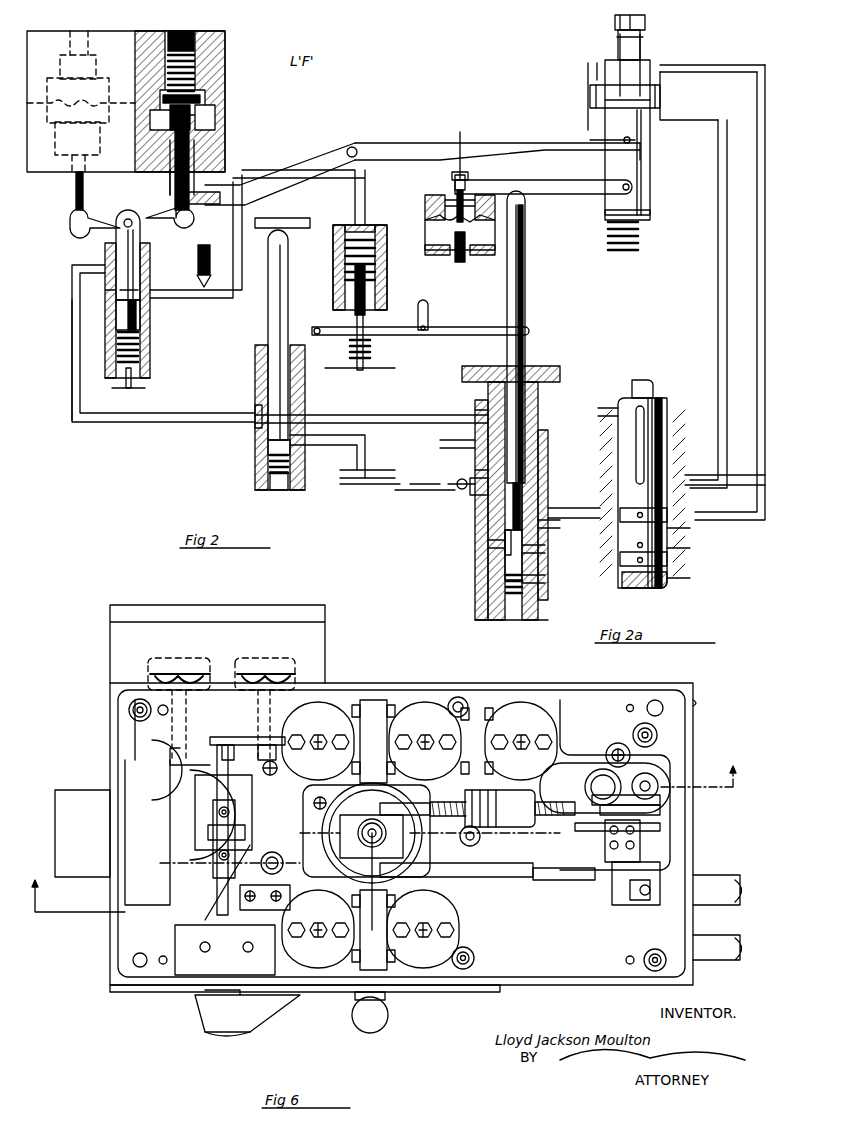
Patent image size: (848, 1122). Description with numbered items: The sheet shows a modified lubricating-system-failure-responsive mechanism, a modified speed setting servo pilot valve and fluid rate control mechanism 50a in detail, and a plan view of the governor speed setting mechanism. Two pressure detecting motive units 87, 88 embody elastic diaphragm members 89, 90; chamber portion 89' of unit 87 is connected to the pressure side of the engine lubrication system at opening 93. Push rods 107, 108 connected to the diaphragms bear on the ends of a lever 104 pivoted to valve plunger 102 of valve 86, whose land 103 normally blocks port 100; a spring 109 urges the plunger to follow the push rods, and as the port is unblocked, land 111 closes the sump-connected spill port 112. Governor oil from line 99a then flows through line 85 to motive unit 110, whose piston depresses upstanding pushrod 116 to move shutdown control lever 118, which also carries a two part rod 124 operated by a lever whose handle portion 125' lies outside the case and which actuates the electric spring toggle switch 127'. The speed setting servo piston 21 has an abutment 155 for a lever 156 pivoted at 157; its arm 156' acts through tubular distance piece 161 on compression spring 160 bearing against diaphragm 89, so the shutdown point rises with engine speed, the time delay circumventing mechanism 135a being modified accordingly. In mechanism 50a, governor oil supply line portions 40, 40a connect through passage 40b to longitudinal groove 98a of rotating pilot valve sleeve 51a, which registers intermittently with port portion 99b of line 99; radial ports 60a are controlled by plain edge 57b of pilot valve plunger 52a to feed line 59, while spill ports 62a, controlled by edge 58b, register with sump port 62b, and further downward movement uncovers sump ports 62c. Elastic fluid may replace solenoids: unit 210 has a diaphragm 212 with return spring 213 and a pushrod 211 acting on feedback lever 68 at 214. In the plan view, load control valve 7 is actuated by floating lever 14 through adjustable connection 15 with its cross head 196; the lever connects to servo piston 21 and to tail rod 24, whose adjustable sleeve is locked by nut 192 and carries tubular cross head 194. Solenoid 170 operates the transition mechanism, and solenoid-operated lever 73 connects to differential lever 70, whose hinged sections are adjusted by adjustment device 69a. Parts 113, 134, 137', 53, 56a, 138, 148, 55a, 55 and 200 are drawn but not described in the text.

In FIG. 2, the pressure detecting motive unit 88 is at (75, 30).
In FIG. 2, the pressure detecting motive unit 87 is at (200, 28).
In FIG. 2, the opening 93 is at (195, 42).
In FIG. 2, the chamber portion 89' is at (215, 72).
In FIG. 2, the elastic diaphragm member 89 is at (210, 91).
In FIG. 6, the elastic diaphragm member 89 is at (270, 697).
In FIG. 2, the compression spring 160 is at (195, 120).
In FIG. 2, the push rod 107 is at (160, 55).
In FIG. 2, the tubular distance piece 161 is at (172, 180).
In FIG. 2, the push rod 108 is at (78, 186).
In FIG. 2, the lever 104 is at (160, 222).
In FIG. 6, the lever 104 is at (170, 752).
In FIG. 2, the valve plunger 102 is at (128, 218).
In FIG. 2, the land 103 is at (118, 258).
In FIG. 2, the port 100 is at (110, 282).
In FIG. 2, the spill port 112 is at (112, 312).
In FIG. 2, the land 111 is at (140, 318).
In FIG. 2, the spring 109 is at (142, 352).
In FIG. 2, the screw 113 is at (196, 264).
In FIG. 2, the valve 86 is at (68, 366).
In FIG. 2, the line 99a is at (136, 415).
In FIG. 2, the line 85 is at (232, 298).
In FIG. 2, the time delay fluid control circumventing mechanism 135a is at (252, 404).
In FIG. 2, the plate 134 is at (302, 228).
In FIG. 2, the rod 137' is at (297, 335).
In FIG. 2, the motive unit 110 is at (391, 258).
In FIG. 2, the pushrod 116 is at (364, 331).
In FIG. 2, the shutdown control lever 118 is at (440, 334).
In FIG. 2, the two part rod 124 is at (430, 312).
In FIG. 2, the lever 156 is at (497, 137).
In FIG. 2, the lever arm 156' is at (280, 161).
In FIG. 2, the pivot 157 is at (355, 147).
In FIG. 2, the floating lever 68 is at (552, 196).
In FIG. 2, the point of action 214 is at (460, 148).
In FIG. 2, the pushrod 211 is at (452, 190).
In FIG. 2, the return spring 213 is at (425, 200).
In FIG. 2, the diaphragm 212 is at (430, 252).
In FIG. 2, the elastic diaphragm assembly 210 is at (480, 255).
In FIG. 2, the speed setting servo piston 21 is at (662, 99).
In FIG. 6, the speed setting servo piston 21 is at (430, 856).
In FIG. 2, the operating abutment 155 is at (640, 140).
In FIG. 2, the conduit 53 is at (718, 306).
In FIG. 2, the feed line 59 is at (760, 408).
In FIG. 2, the pilot valve plunger 52a is at (522, 355).
In FIG. 2A, the pilot valve plunger 52a is at (648, 388).
In FIG. 2, the speed setting servo pilot valve and fluid rate control mechanism 50a is at (462, 400).
In FIG. 2, the pilot valve sleeve 51a is at (530, 405).
In FIG. 2A, the pilot valve sleeve 51a is at (664, 448).
In FIG. 2, the line 99 is at (392, 415).
In FIG. 2, the port portion 99b is at (485, 440).
In FIG. 2A, the port portion 99b is at (612, 418).
In FIG. 2, the longitudinal groove 98a is at (468, 450).
In FIG. 2A, the longitudinal groove 98a is at (644, 430).
In FIG. 2, the radial ports 60a is at (490, 482).
In FIG. 2, the governor pressure oil supply line portion 40 is at (458, 486).
In FIG. 2, the passage 40b is at (480, 495).
In FIG. 2, the plain edge 57b is at (530, 480).
In FIG. 2, the plain edge 58b is at (540, 530).
In FIG. 2, the valve land 56a is at (505, 540).
In FIG. 2, the radial spill ports 62a is at (485, 550).
In FIG. 2A, the radial spill ports 62a is at (668, 535).
In FIG. 2, the sump-communicating port 62b is at (535, 552).
In FIG. 2A, the sump-communicating port 62b is at (668, 548).
In FIG. 2, the radial ports 62c is at (535, 585).
In FIG. 2A, the radial ports 62c is at (668, 578).
In FIG. 2, the cylinder 138 is at (262, 445).
In FIG. 2, the spring 148 is at (270, 475).
In FIG. 2, the conduit 55a is at (355, 460).
In FIG. 2, the conduit 55 is at (378, 488).
In FIG. 2A, the governor pressure oil supply line portion 40a is at (685, 478).
In FIG. 6, the base plate 200 is at (485, 695).
In FIG. 6, the solenoid 170 is at (419, 835).
In FIG. 6, the cross head 196 is at (506, 825).
In FIG. 6, the floating lever 14 is at (598, 826).
In FIG. 6, the adjustable connection 15 is at (555, 782).
In FIG. 6, the governor power piston tail rod 24 is at (652, 785).
In FIG. 6, the nut 192 is at (660, 797).
In FIG. 6, the tubular cross head 194 is at (665, 810).
In FIG. 6, the load control valve 7 is at (379, 828).
In FIG. 6, the solenoid-operated lever 73 is at (235, 735).
In FIG. 6, the differential lever 70 is at (215, 788).
In FIG. 6, the adjustment device 69a is at (240, 810).
In FIG. 6, the elastic diaphragm member 90 is at (195, 670).
In FIG. 6, the electric spring toggle switch 127' is at (200, 930).
In FIG. 6, the handle portion 125' is at (250, 1013).